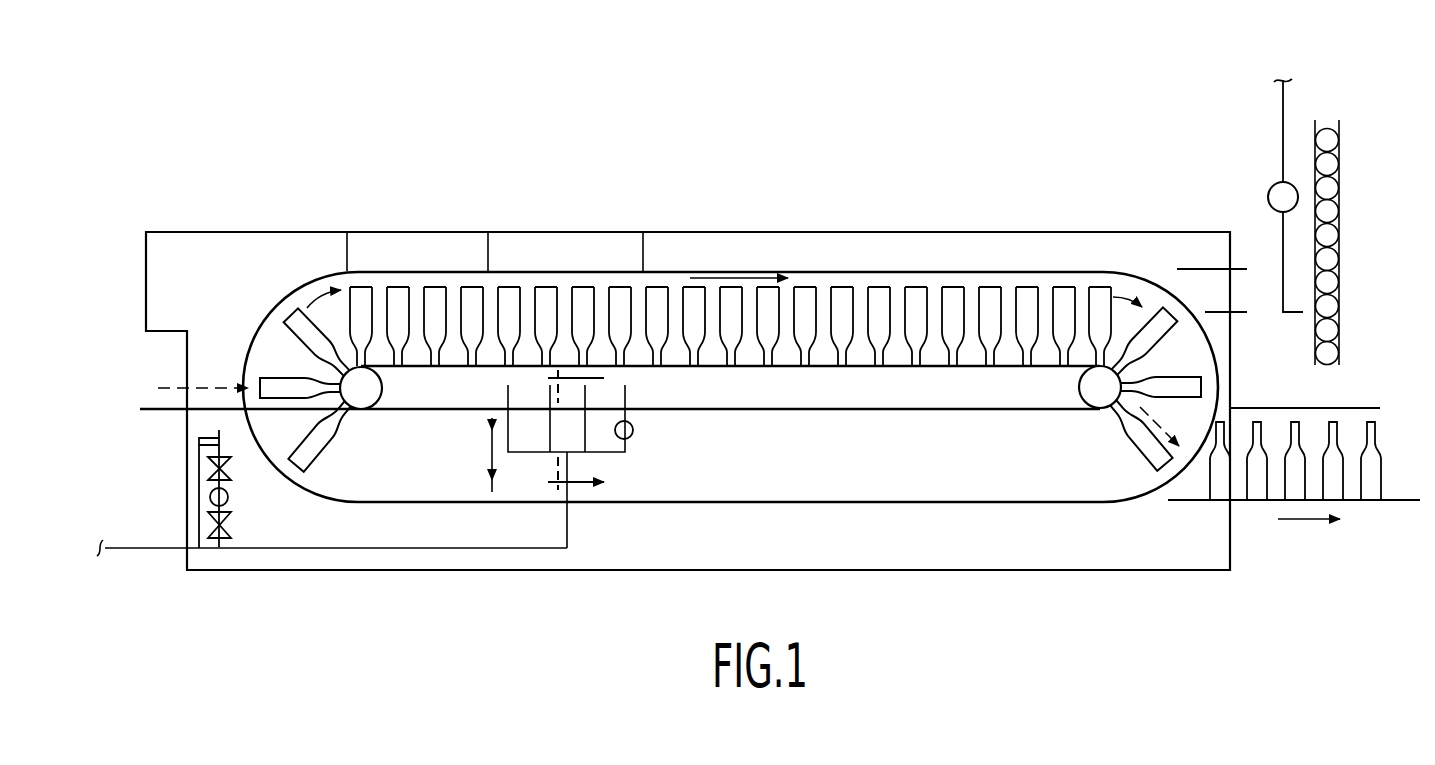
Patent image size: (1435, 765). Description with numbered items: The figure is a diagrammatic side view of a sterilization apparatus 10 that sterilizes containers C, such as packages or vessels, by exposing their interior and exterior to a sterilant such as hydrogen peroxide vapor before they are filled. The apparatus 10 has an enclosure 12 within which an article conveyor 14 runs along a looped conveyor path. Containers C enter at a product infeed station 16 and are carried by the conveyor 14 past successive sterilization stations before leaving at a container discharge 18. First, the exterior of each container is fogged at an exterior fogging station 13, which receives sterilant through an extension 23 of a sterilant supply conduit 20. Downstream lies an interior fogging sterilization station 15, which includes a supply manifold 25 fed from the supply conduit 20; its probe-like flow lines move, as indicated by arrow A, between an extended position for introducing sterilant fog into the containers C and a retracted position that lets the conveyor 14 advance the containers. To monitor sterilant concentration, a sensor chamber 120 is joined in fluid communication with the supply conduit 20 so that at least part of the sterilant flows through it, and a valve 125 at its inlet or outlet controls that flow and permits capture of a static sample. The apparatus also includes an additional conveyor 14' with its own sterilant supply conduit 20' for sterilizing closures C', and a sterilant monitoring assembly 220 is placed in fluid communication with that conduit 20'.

The sterilization apparatus 10 is at (1016, 167).
The enclosure 12 is at (1101, 229).
The exterior fogging station 13 is at (209, 345).
The article conveyor 14 is at (679, 387).
The additional conveyor 14' is at (1366, 242).
The interior fogging sterilization station 15 is at (577, 262).
The product infeed station 16 is at (118, 410).
The container discharge 18 is at (1317, 538).
The sterilant supply conduit 20 is at (338, 588).
The sterilant supply conduit 20' is at (1332, 170).
The extension 23 is at (197, 444).
The supply manifold 25 is at (613, 498).
The sensor chamber 120 is at (211, 498).
The valve 125 is at (208, 490).
The sterilant monitoring assembly 220 is at (1269, 190).
The containers C is at (730, 268).
The closure C' is at (1356, 247).
The arrow A is at (475, 455).